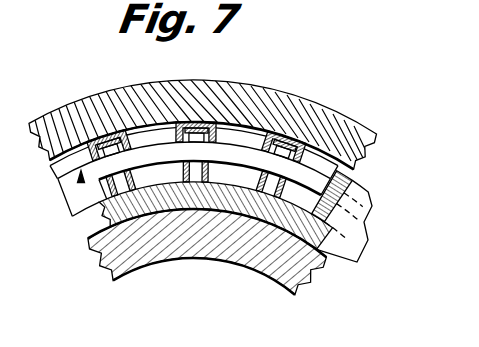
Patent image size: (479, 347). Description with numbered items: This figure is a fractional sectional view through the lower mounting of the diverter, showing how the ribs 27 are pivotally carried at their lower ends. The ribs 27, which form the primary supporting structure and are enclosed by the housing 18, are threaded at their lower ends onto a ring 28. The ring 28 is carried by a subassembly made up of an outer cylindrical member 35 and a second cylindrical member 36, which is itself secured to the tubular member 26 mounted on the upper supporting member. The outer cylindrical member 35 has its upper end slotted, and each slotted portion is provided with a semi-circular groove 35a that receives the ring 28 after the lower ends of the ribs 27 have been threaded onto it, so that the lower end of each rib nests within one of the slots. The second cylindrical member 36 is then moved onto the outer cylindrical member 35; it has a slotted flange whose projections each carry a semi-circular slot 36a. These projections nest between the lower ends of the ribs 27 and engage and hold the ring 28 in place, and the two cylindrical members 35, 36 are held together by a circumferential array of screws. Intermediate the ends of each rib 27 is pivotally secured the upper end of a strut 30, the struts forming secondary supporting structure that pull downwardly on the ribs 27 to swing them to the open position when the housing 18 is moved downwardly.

The housing 18 is at (325, 118).
The tubular member 26 is at (255, 262).
The ribs 27 is at (184, 181).
The ring 28 is at (150, 150).
The strut 30 is at (210, 121).
The outer cylindrical member 35 is at (85, 200).
The semi-circular groove 35a is at (62, 182).
The second cylindrical member 36 is at (105, 209).
The semi-circular slot 36a is at (342, 185).